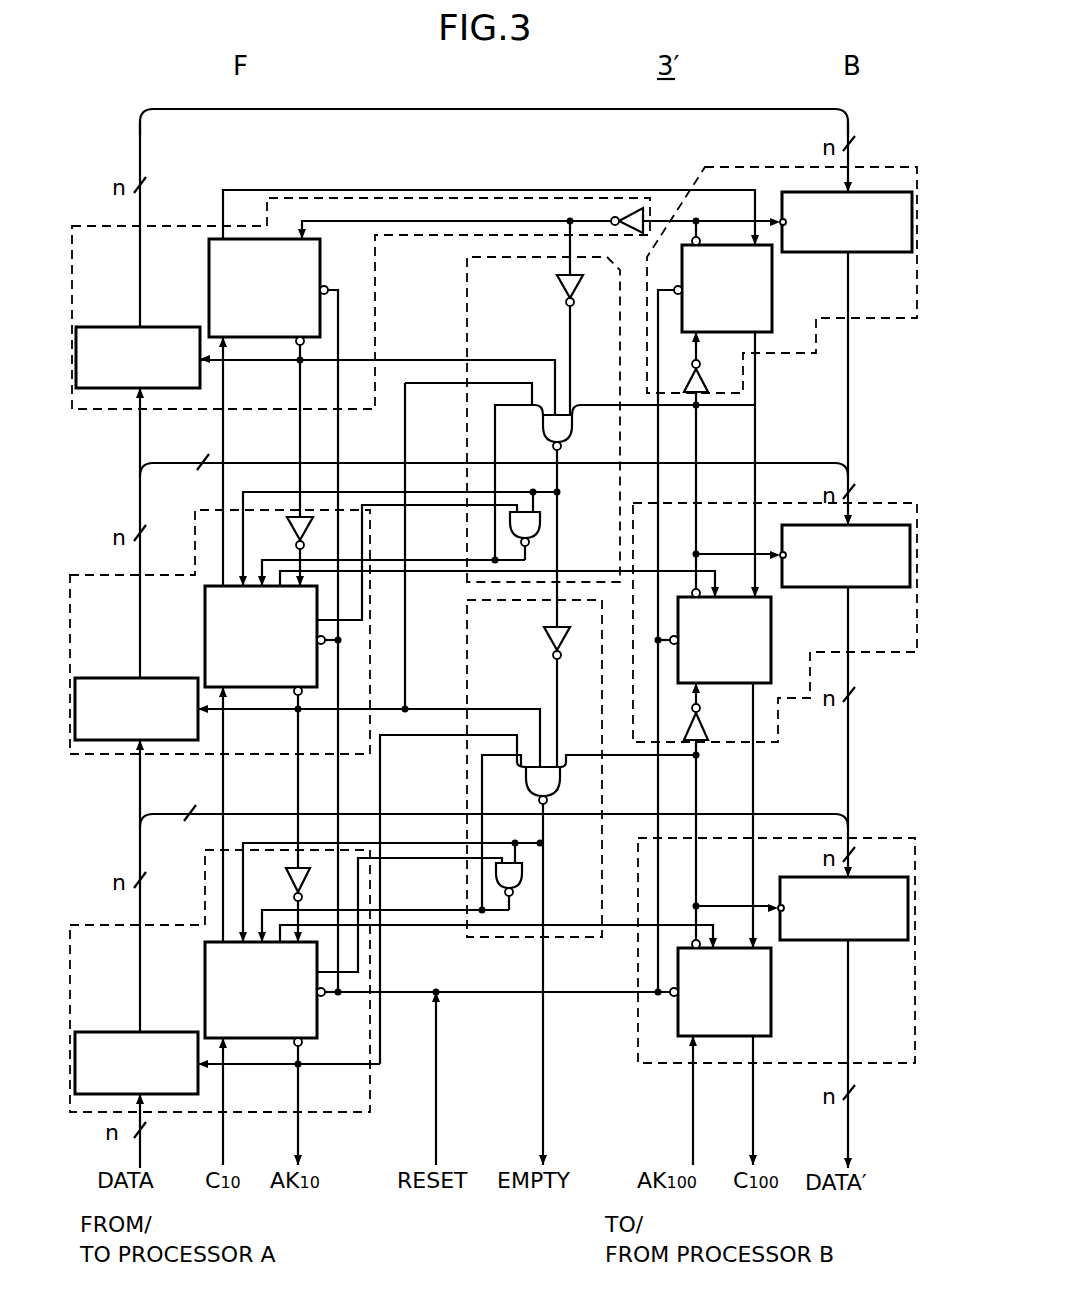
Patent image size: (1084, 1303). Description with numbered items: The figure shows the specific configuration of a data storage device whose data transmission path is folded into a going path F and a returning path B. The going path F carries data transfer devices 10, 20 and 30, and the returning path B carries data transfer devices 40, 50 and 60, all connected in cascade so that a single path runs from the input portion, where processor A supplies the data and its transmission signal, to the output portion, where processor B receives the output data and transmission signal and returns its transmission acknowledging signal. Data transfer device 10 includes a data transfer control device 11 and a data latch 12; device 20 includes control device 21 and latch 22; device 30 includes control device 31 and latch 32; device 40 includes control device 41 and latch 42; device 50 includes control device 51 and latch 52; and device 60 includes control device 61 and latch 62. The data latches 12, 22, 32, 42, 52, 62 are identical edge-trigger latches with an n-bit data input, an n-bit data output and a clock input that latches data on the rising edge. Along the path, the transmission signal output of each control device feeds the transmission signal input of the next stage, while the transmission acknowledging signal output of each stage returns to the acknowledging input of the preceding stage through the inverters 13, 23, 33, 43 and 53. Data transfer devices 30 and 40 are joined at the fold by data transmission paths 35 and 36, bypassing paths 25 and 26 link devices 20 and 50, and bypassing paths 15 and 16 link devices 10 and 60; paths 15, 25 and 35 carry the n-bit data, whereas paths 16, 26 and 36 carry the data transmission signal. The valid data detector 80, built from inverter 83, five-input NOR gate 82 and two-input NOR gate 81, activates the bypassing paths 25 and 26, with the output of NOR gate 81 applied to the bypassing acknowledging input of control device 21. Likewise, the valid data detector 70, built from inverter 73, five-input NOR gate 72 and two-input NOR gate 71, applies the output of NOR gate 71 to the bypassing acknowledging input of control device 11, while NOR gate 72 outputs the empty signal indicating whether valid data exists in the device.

The data transfer device 10 is at (372, 1105).
The data transfer control device 11 is at (318, 1034).
The data latch 12 is at (169, 1030).
The inverter 13 is at (287, 905).
The bypassing path 15 is at (168, 816).
The bypassing path 16 is at (417, 927).
The data transfer device 20 is at (168, 574).
The data transfer control device 21 is at (255, 690).
The data latch 22 is at (172, 677).
The inverter 23 is at (285, 465).
The bypassing path 25 is at (176, 470).
The bypassing path 26 is at (437, 575).
The data transfer device 30 is at (202, 225).
The data transfer control device 31 is at (324, 274).
The data latch 32 is at (182, 326).
The inverter 33 is at (627, 236).
The data transmission path 35 is at (221, 116).
The data transmission path 36 is at (522, 190).
The data transfer device 40 is at (793, 358).
The data transfer control device 41 is at (773, 317).
The data latch 42 is at (831, 254).
The inverter 43 is at (714, 460).
The data transfer device 50 is at (796, 707).
The data transfer control device 51 is at (773, 655).
The data latch 52 is at (821, 590).
The inverter 53 is at (713, 811).
The data transfer device 60 is at (770, 970).
The data transfer control device 61 is at (773, 1021).
The data latch 62 is at (829, 943).
The valid data detector 70 is at (505, 939).
The 2-input NOR gate 71 is at (521, 889).
The 5-input NOR gate 72 is at (557, 966).
The inverter 73 is at (569, 697).
The valid data detector 80 is at (463, 302).
The 2-input NOR gate 81 is at (534, 538).
The 5-input NOR gate 82 is at (573, 521).
The inverter 83 is at (585, 318).